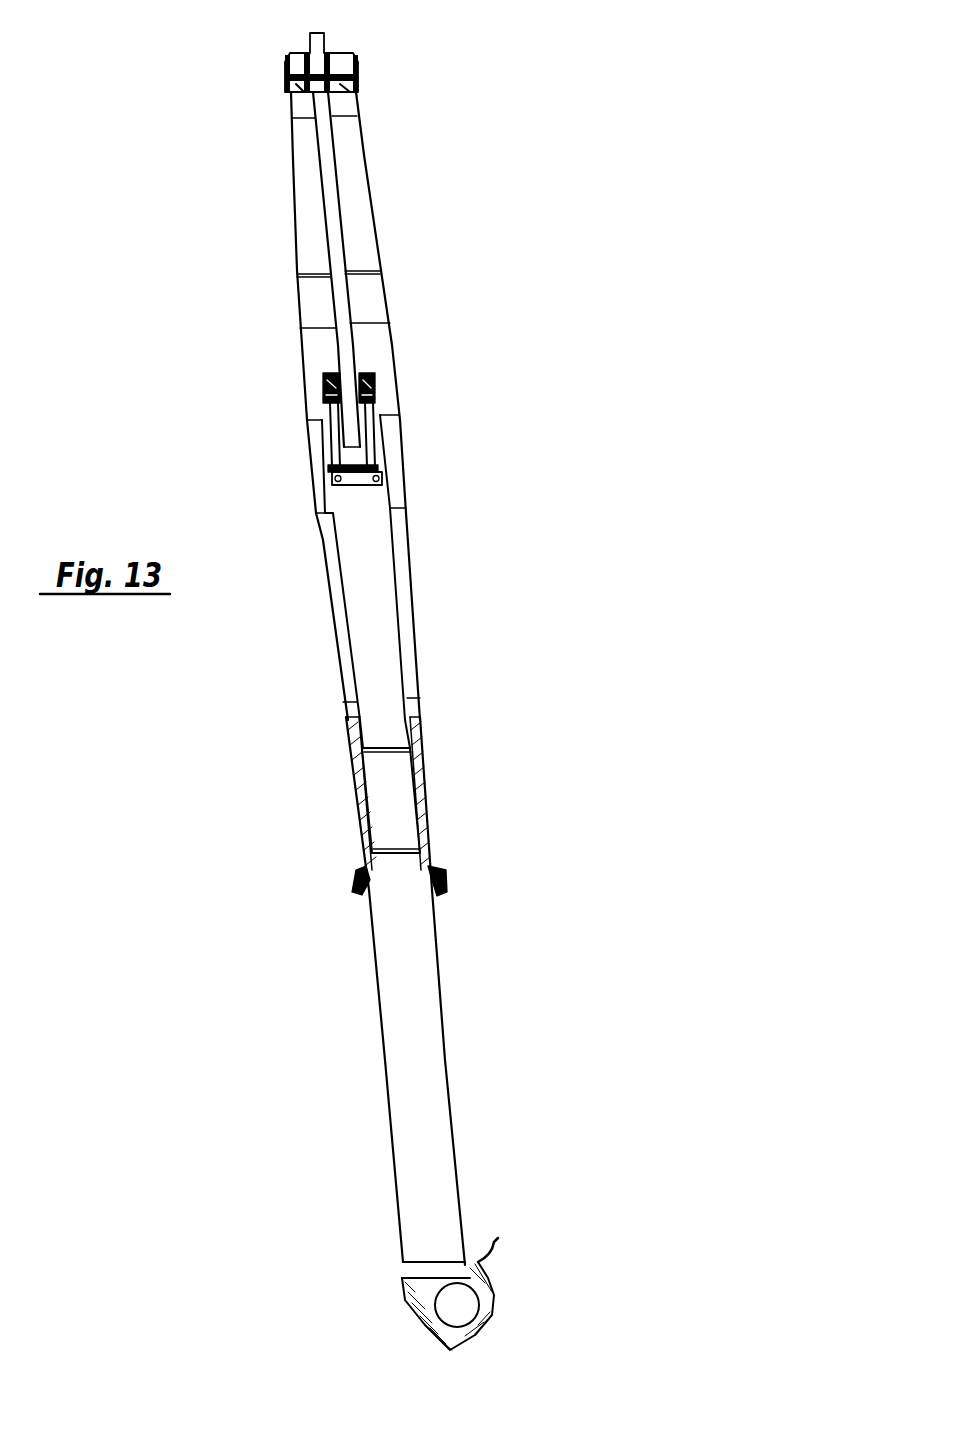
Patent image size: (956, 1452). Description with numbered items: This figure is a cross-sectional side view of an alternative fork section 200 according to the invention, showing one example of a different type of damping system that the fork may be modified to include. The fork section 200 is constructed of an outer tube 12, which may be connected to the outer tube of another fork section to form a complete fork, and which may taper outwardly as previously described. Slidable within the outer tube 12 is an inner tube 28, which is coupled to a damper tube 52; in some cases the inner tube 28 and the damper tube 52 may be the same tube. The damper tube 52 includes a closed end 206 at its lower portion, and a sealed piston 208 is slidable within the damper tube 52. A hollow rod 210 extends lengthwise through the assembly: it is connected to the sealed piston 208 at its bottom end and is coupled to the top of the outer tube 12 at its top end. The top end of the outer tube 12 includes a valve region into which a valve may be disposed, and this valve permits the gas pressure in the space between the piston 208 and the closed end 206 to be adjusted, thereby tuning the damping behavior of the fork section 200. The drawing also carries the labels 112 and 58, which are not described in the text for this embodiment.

The fork section 200 is at (490, 257).
The top cap 112 is at (343, 52).
The hollow rod 210 is at (345, 237).
The piston 58 is at (370, 375).
The outer tube 12 is at (403, 452).
The sealed piston 208 is at (387, 513).
The damper tube 52 is at (397, 597).
The closed end 206 is at (398, 858).
The inner tube 28 is at (439, 978).